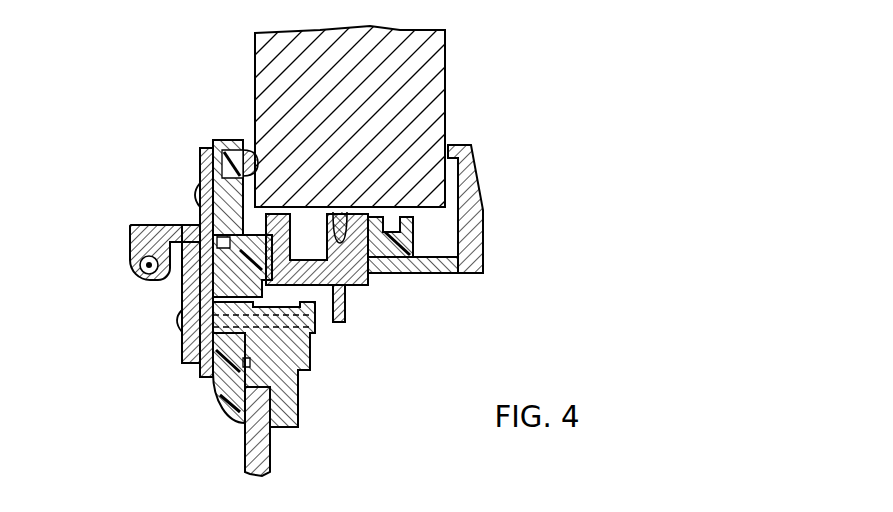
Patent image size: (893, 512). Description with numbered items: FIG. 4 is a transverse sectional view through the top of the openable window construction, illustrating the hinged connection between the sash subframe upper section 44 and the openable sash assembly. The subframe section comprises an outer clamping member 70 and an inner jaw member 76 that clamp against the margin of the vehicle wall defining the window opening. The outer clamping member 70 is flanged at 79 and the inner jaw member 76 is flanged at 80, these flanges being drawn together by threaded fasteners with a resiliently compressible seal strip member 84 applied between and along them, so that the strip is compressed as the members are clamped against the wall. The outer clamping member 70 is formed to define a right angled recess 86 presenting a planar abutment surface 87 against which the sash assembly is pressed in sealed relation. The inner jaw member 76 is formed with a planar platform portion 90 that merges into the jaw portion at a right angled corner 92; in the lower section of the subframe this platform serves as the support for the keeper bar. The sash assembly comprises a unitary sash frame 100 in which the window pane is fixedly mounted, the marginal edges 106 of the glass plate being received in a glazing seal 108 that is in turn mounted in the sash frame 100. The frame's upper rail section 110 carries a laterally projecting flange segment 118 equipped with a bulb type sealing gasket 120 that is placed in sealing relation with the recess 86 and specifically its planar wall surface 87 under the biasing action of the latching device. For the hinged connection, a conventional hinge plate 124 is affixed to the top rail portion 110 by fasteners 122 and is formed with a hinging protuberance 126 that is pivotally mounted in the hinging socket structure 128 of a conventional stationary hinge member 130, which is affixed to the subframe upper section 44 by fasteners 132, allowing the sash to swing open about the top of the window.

The upper section 44 is at (500, 223).
The outer clamping member 70 is at (471, 148).
The inner jaw member 76 is at (506, 199).
The flange 79 is at (357, 216).
The flange 80 is at (403, 217).
The seal strip member 84 is at (377, 275).
The right angled recess 86 is at (245, 220).
The planar abutment surface 87 is at (334, 241).
The planar platform portion 90 is at (467, 278).
The right angled corner 92 is at (466, 289).
The sash frame 100 is at (322, 364).
The marginal edges 106 is at (228, 412).
The glazing seal 108 is at (208, 393).
The upper rail section 110 is at (313, 346).
The flange segment 118 is at (200, 298).
The bulb type sealing gasket 120 is at (253, 222).
The fasteners 122 is at (178, 330).
The hinge plate 124 is at (132, 319).
The hinging protuberance 126 is at (120, 256).
The hinging socket structure 128 is at (130, 285).
The stationary hinge member 130 is at (151, 240).
The fasteners 132 is at (195, 193).